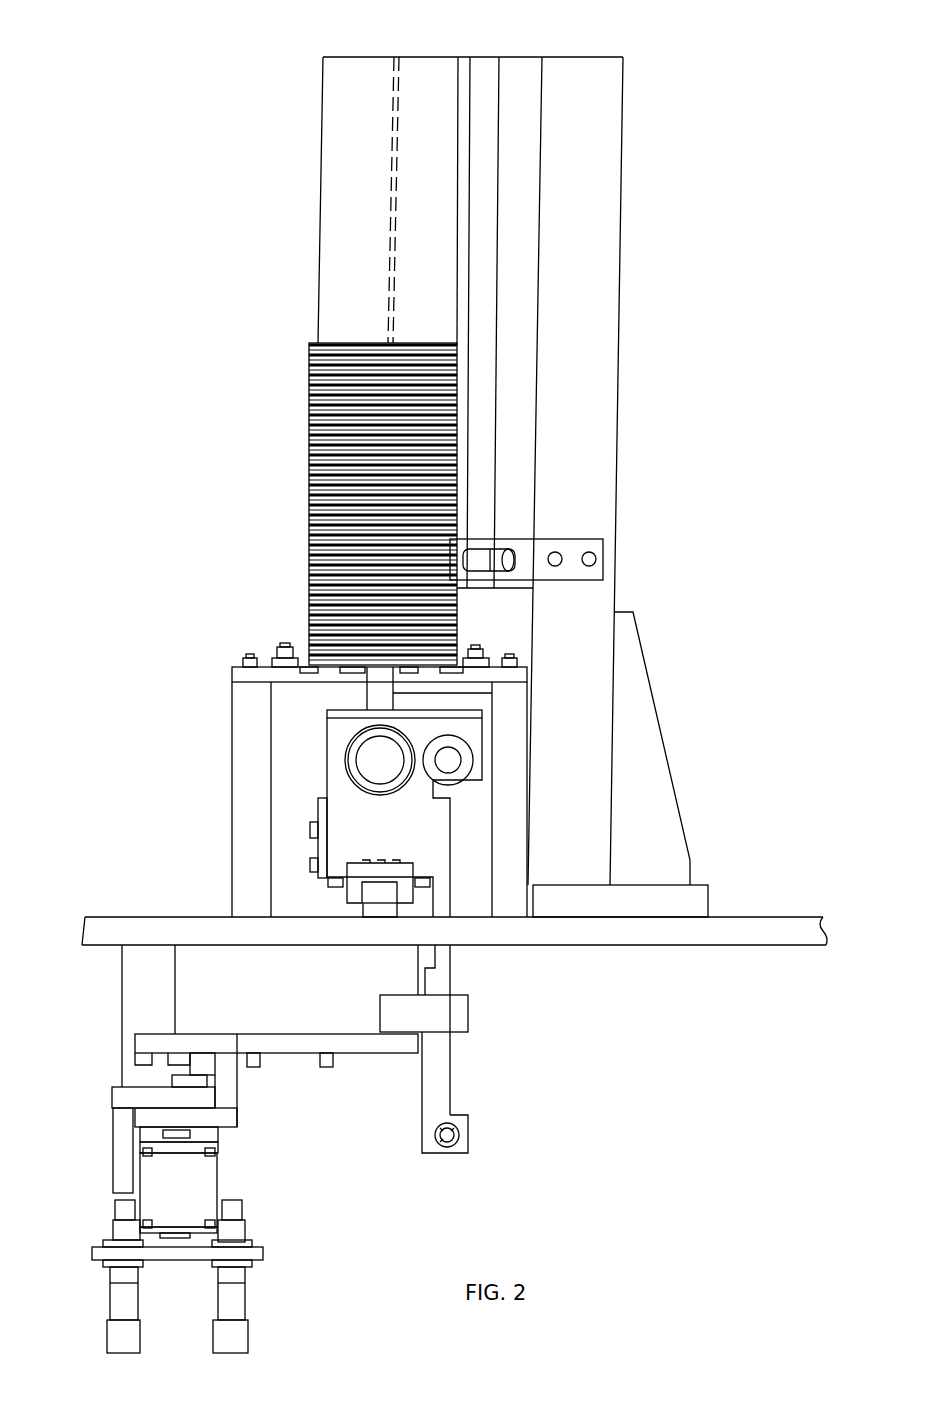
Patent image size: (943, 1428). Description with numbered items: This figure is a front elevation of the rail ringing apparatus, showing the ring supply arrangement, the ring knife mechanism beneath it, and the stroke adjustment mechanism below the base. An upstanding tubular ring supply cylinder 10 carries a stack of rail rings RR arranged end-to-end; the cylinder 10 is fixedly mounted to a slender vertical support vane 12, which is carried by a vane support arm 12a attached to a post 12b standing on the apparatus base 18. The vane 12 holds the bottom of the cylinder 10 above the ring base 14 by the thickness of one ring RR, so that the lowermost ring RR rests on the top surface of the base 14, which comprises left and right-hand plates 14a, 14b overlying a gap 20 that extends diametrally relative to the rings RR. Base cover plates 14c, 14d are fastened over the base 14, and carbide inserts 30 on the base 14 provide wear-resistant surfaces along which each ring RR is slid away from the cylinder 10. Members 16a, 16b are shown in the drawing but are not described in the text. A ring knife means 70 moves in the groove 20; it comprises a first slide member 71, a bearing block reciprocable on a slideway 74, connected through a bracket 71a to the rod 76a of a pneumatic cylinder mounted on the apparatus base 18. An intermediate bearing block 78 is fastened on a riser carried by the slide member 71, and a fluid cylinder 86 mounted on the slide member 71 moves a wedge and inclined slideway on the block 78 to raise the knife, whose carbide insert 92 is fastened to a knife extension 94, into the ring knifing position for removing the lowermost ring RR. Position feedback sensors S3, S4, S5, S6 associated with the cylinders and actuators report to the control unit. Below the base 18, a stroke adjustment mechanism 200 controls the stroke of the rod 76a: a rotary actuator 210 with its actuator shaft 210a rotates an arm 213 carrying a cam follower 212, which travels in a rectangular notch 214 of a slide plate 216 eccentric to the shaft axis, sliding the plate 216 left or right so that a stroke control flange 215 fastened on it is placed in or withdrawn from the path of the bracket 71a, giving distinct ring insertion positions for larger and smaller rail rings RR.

The ring supply cylinder 10 is at (330, 292).
The vertical support vane 12 is at (405, 92).
The vane support arm 12a is at (512, 63).
The post 12b is at (603, 600).
The ring base 14 is at (232, 672).
The left-hand plate 14a is at (288, 675).
The right-hand plate 14b is at (485, 672).
The base cover plate 14c is at (293, 658).
The base cover plate 14d is at (462, 658).
The support leg 16a is at (237, 745).
The support leg 16b is at (508, 740).
The apparatus base 18 is at (748, 938).
The gap 20 is at (367, 693).
The carbide inserts 30 is at (307, 681).
The ring knife means 70 is at (327, 735).
The first slide member 71 is at (347, 900).
The bracket 71a is at (437, 1055).
The slideway 74 is at (378, 908).
The rod 76a is at (455, 1138).
The intermediate bearing block 78 is at (380, 835).
The fluid cylinder 86 is at (380, 760).
The carbide insert 92 is at (378, 690).
The knife extension 94 is at (516, 717).
The rail rings RR is at (310, 615).
The position feedback sensor S3 is at (450, 760).
The position feedback sensor S4 is at (105, 1335).
The position feedback sensor S5 is at (243, 1334).
The position feedback sensor S6 is at (483, 556).
The stroke adjustment mechanism 200 is at (256, 1233).
The rotary actuator 210 is at (179, 1182).
The actuator shaft 210a is at (140, 1100).
The cam follower 212 is at (200, 1060).
The arm 213 is at (112, 1097).
The rectangular notch 214 is at (135, 1060).
The stroke control flange 215 is at (424, 1013).
The slide plate 216 is at (364, 1043).